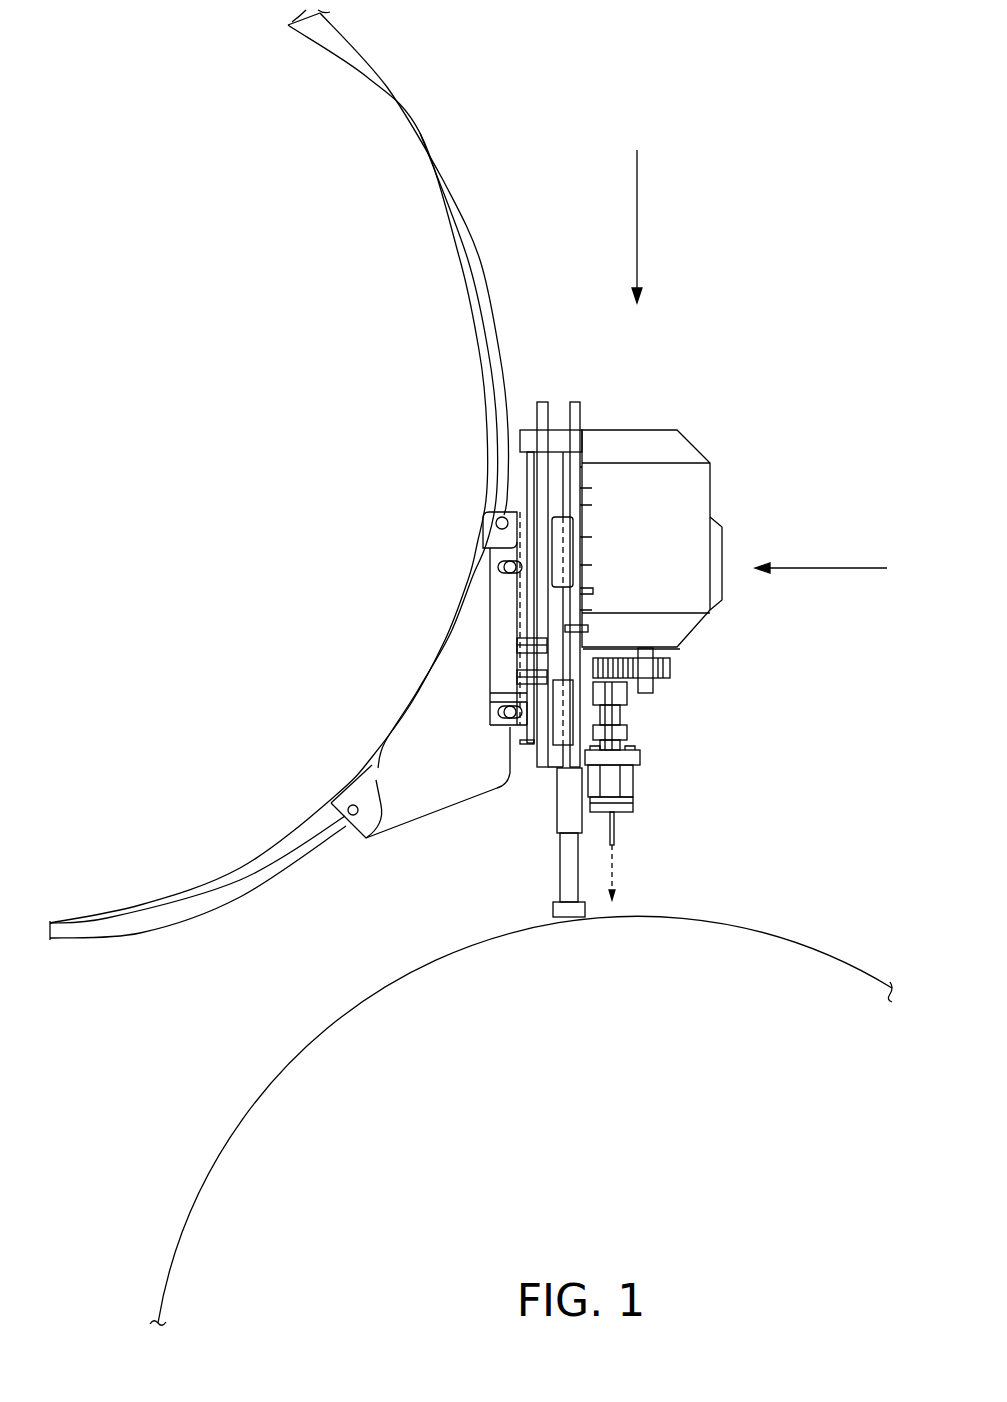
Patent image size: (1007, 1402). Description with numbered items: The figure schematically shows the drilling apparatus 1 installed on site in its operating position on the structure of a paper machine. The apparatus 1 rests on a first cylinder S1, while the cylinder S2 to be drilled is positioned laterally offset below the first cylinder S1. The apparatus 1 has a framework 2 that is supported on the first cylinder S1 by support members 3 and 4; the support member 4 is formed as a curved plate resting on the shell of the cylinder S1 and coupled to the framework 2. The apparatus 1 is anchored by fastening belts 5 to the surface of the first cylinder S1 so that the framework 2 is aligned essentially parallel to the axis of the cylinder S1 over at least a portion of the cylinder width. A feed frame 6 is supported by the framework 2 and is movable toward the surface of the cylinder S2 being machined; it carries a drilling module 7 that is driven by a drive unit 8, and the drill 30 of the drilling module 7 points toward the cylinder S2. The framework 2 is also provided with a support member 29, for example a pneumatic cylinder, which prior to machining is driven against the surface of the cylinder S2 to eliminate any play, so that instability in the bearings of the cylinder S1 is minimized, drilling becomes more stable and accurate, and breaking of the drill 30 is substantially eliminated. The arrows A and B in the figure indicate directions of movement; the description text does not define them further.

The apparatus 1 is at (722, 644).
The framework 2 is at (557, 438).
The support member 3 is at (525, 475).
The support member 4 is at (381, 806).
The fastening belts 5 is at (460, 230).
The feed frame 6 is at (577, 418).
The drilling modules 7 is at (660, 752).
The drive unit 8 is at (698, 558).
The support members 29 is at (563, 807).
The drills 30 is at (615, 882).
The first cylinder S1 is at (327, 100).
The cylinder to be drilled S2 is at (802, 985).
The direction A is at (830, 568).
The direction B is at (640, 262).